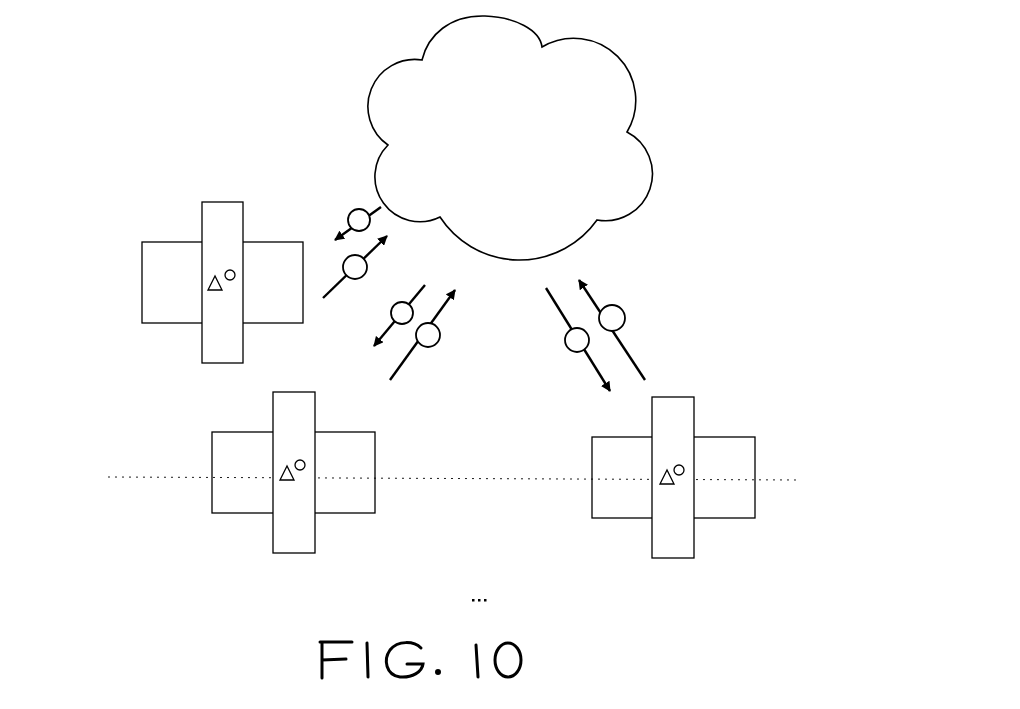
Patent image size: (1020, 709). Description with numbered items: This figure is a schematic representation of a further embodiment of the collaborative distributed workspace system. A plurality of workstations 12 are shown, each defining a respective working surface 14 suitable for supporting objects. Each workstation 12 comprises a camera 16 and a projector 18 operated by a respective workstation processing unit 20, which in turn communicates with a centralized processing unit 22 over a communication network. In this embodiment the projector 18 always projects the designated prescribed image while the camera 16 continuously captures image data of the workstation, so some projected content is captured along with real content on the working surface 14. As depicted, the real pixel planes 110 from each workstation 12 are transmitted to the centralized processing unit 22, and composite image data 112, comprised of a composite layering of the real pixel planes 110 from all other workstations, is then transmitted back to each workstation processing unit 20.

The workstation 12 is at (300, 212).
The working surface 14 is at (173, 292).
The camera 16 is at (236, 273).
The projector 18 is at (213, 278).
The workstation processing unit 20 is at (235, 353).
The centralized processing unit 22 is at (577, 77).
The real pixel plane 110 is at (368, 264).
The composite image data 112 is at (350, 209).